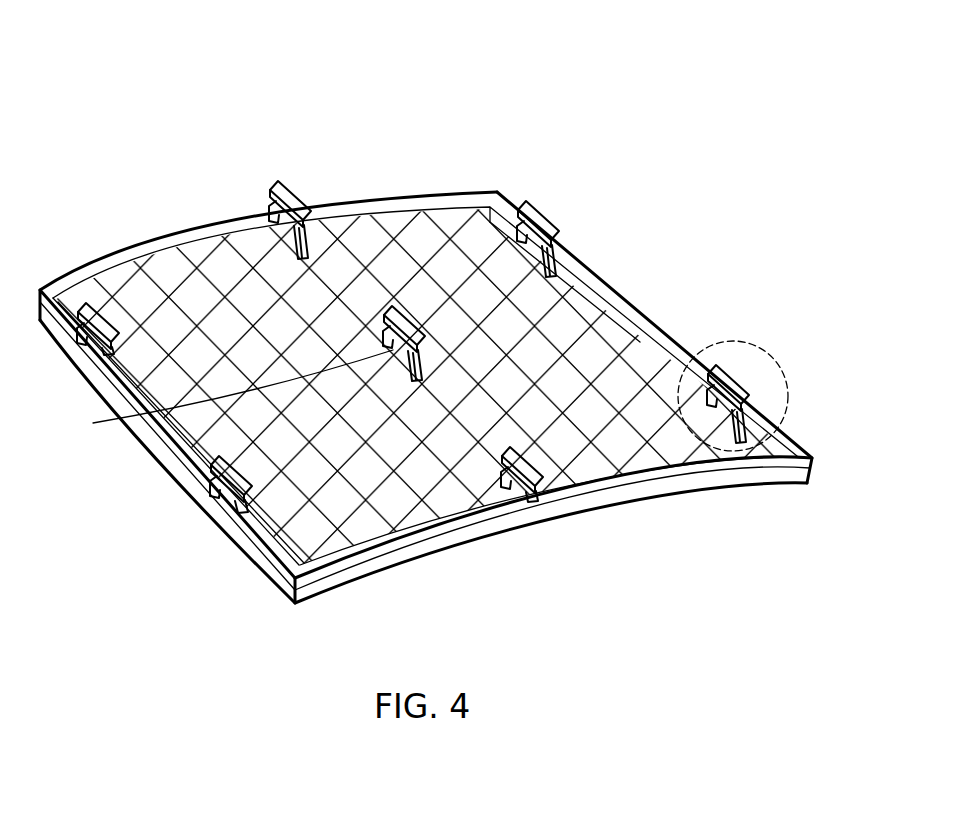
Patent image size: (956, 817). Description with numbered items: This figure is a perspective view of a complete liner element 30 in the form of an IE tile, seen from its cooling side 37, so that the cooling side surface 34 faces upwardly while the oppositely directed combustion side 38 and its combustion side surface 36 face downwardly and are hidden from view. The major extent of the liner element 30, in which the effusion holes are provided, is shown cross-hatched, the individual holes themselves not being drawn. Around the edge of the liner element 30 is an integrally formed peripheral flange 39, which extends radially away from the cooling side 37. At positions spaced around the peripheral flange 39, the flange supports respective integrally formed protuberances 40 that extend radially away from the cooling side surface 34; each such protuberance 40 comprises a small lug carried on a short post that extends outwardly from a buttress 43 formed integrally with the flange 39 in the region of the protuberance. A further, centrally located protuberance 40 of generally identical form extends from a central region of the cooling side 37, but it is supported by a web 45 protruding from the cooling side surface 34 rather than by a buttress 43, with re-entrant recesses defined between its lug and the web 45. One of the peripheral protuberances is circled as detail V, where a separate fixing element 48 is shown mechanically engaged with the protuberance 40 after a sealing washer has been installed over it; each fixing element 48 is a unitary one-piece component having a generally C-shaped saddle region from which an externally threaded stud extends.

The liner element 30 is at (660, 91).
The cooling side surface 34 is at (640, 367).
The combustion side surface 36 is at (348, 583).
The cooling side 37 is at (603, 333).
The combustion side 38 is at (663, 519).
The peripheral flange 39 is at (168, 433).
The protuberance 40 is at (97, 290).
The buttress 43 is at (290, 237).
The web 45 is at (227, 396).
The fixing element 48 is at (737, 427).
The detail view V is at (787, 372).